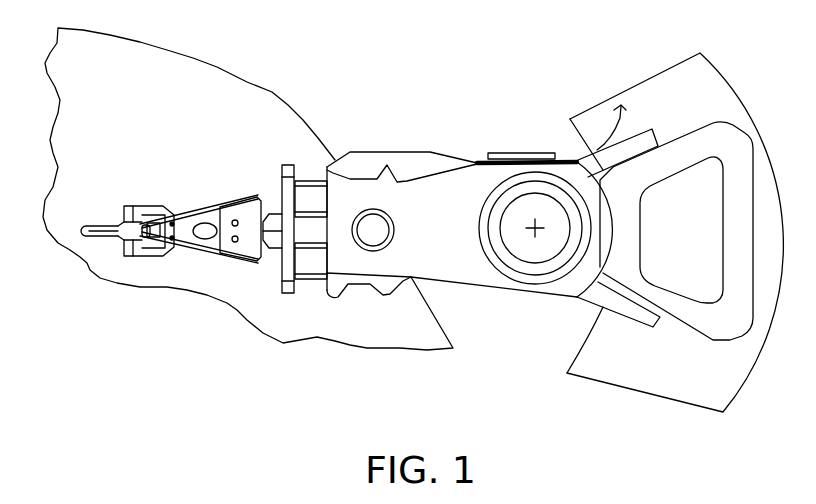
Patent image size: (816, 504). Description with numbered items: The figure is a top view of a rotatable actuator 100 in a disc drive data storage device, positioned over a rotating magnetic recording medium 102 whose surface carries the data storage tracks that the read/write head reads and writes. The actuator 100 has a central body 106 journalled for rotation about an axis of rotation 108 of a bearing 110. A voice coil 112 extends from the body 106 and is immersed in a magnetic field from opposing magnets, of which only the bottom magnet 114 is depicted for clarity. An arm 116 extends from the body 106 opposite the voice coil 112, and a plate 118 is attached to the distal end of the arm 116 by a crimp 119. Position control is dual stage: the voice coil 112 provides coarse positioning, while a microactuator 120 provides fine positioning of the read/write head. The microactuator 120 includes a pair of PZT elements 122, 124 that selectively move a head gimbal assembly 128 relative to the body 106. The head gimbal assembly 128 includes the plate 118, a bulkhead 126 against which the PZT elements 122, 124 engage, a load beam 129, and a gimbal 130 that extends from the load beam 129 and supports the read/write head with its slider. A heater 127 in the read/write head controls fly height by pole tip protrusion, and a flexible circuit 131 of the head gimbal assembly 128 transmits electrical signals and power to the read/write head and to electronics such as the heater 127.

The rotatable actuator 100 is at (137, 92).
The magnetic recording medium 102 is at (182, 52).
The central body 106 is at (458, 175).
The axis of rotation 108 is at (532, 238).
The bearing 110 is at (546, 267).
The voice coil 112 is at (733, 320).
The bottom magnet 114 is at (652, 394).
The arm 116 is at (436, 255).
The plate 118 is at (346, 290).
The crimp 119 is at (388, 214).
The microactuator 120 is at (278, 136).
The PZT element 122 is at (311, 193).
The PZT element 124 is at (315, 267).
The bulkhead 126 is at (286, 167).
The heater 127 is at (143, 238).
The head gimbal assembly 128 is at (168, 172).
The load beam 129 is at (210, 217).
The gimbal 130 is at (158, 206).
The flexible circuit 131 is at (151, 243).